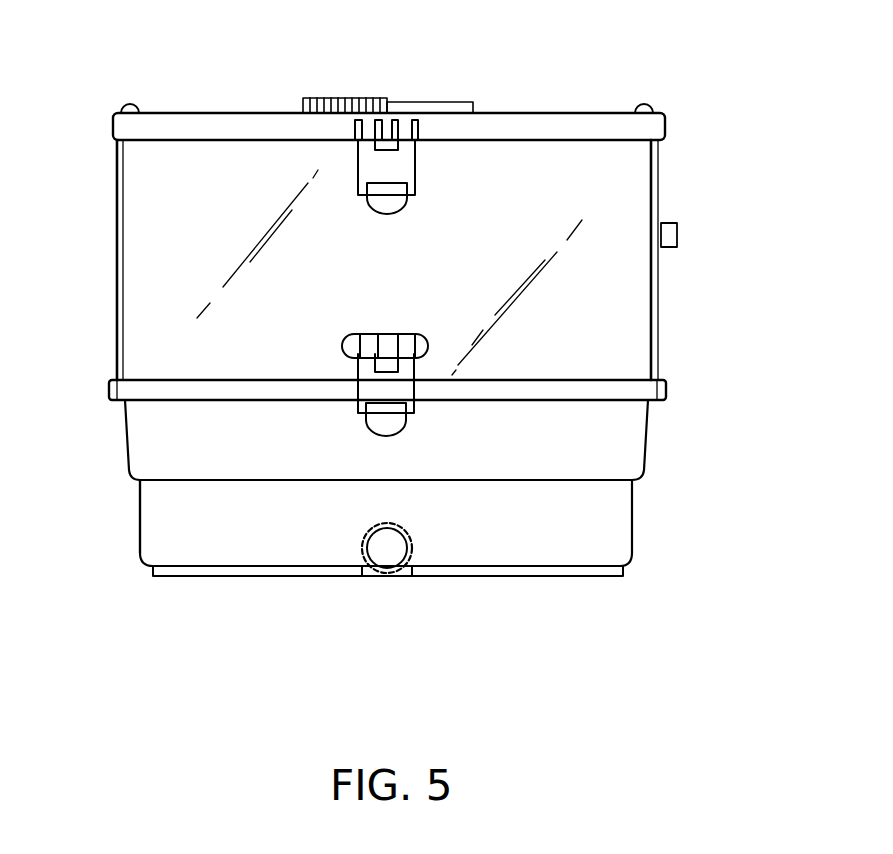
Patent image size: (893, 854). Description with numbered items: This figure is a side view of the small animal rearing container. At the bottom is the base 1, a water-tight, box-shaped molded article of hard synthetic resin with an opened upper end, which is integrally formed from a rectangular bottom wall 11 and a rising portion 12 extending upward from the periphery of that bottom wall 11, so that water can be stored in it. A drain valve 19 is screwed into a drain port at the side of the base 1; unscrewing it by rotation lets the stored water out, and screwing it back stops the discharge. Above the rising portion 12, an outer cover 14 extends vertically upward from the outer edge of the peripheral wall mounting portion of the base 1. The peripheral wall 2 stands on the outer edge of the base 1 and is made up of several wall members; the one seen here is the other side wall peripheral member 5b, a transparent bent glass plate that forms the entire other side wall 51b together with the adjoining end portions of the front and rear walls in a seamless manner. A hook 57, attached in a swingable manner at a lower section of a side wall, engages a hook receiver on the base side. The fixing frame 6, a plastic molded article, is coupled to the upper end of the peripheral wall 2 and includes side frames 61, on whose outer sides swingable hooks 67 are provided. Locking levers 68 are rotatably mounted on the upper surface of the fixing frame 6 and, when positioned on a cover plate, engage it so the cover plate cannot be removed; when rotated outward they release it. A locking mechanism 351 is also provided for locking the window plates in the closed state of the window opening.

The base 1 is at (615, 522).
The peripheral wall 2 is at (630, 183).
The other side wall peripheral member 5b is at (540, 185).
The fixing frame 6 is at (195, 110).
The bottom wall 11 is at (262, 566).
The rising portion 12 is at (170, 522).
The outer cover 14 is at (556, 390).
The drain valve 19 is at (385, 555).
The other side wall 51b is at (262, 185).
The hook 57 is at (365, 372).
The side frame 61 is at (498, 123).
The hook 67 is at (397, 178).
The locking lever 68 is at (128, 103).
The locking mechanism 351 is at (680, 240).